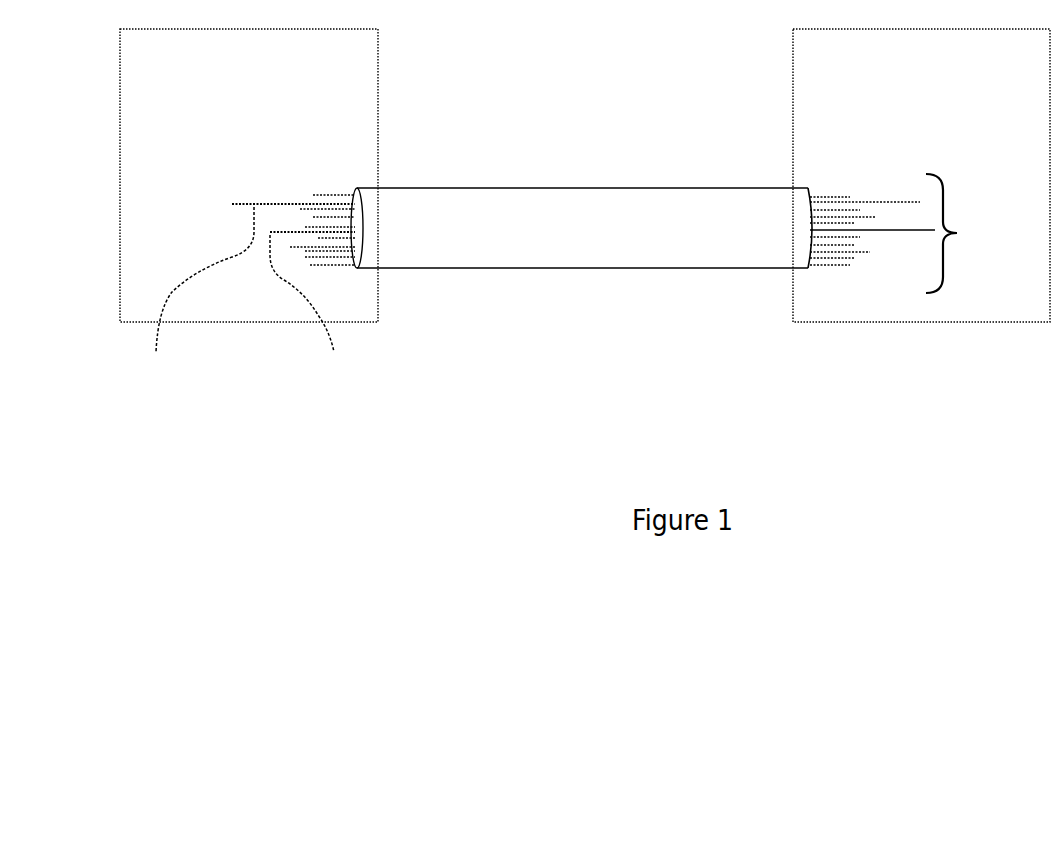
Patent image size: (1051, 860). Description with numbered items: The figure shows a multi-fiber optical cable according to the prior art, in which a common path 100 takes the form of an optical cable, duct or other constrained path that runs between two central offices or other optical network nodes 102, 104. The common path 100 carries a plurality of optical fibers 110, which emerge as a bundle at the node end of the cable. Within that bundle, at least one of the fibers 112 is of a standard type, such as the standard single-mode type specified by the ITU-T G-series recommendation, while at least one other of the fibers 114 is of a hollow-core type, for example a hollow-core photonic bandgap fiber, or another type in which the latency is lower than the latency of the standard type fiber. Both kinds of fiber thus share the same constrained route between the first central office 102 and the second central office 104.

The common path 100 is at (581, 228).
The central office 102 is at (262, 116).
The central office 104 is at (925, 75).
The optical fibers 110 is at (957, 233).
The standard type fiber 112 is at (211, 314).
The hollow-core type fiber 114 is at (340, 328).